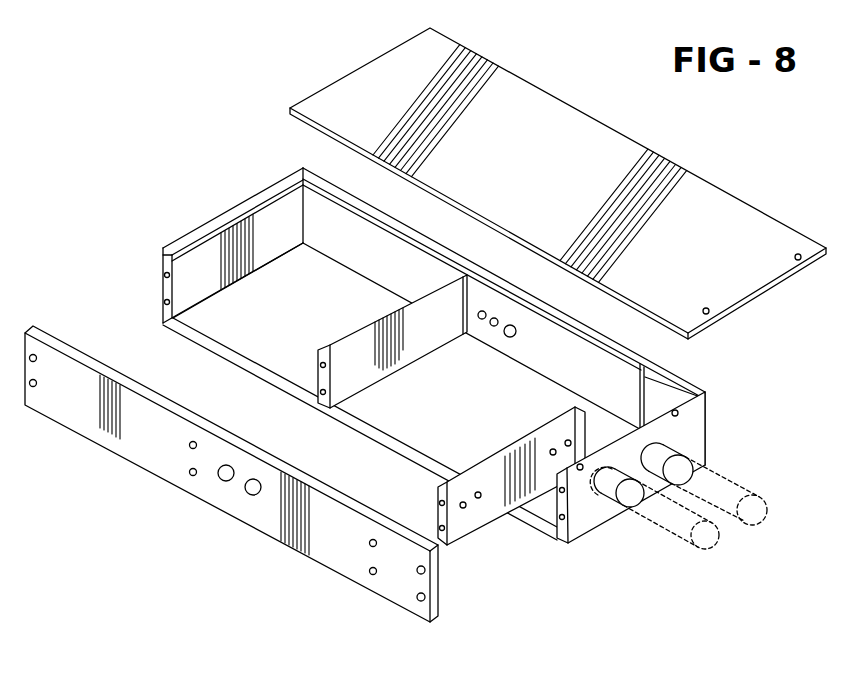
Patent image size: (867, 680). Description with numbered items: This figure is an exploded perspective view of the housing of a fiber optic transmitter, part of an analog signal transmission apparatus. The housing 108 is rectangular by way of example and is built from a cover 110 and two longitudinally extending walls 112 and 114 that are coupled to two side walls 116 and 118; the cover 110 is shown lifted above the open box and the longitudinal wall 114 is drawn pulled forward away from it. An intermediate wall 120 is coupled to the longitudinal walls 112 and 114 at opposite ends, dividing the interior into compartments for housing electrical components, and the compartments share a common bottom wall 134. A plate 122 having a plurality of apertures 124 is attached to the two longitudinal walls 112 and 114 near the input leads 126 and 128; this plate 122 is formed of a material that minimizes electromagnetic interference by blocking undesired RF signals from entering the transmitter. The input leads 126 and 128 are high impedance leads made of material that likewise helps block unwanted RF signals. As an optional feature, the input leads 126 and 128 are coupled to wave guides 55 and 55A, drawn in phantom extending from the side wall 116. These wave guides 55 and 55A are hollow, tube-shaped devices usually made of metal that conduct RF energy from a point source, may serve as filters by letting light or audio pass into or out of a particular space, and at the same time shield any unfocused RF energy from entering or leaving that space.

The housing 108 is at (448, 325).
The cover 110 is at (570, 127).
The longitudinally extending wall 112 is at (690, 373).
The longitudinally extending wall 114 is at (320, 540).
The side wall 116 is at (583, 518).
The side wall 118 is at (198, 224).
The intermediate wall 120 is at (350, 378).
The plate 122 is at (511, 516).
The apertures 124 is at (481, 498).
The input lead 126 is at (613, 492).
The input lead 128 is at (695, 446).
The bottom wall 134 is at (265, 343).
The wave guide 55 is at (763, 517).
The wave guide 55A is at (718, 538).